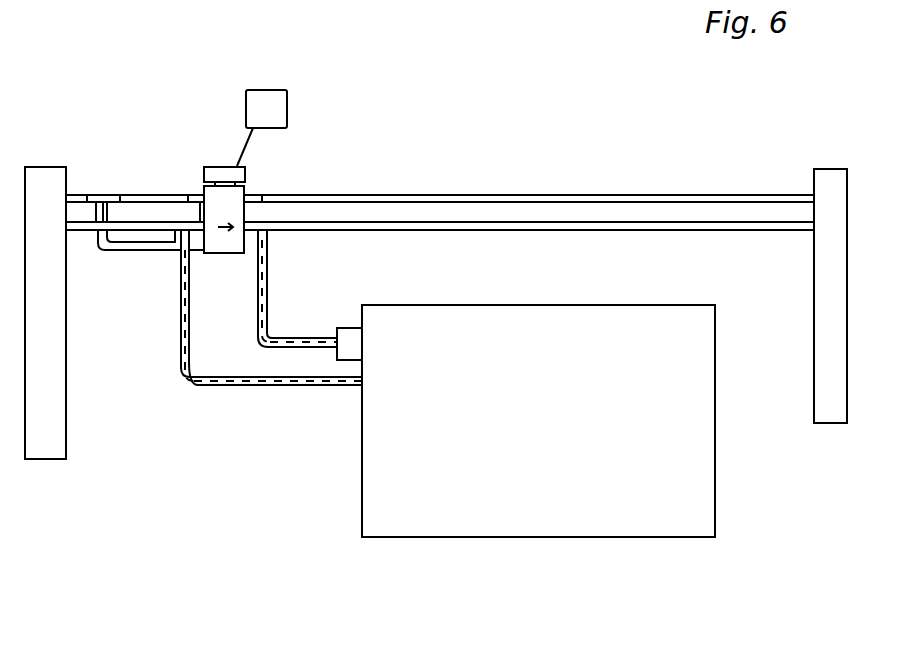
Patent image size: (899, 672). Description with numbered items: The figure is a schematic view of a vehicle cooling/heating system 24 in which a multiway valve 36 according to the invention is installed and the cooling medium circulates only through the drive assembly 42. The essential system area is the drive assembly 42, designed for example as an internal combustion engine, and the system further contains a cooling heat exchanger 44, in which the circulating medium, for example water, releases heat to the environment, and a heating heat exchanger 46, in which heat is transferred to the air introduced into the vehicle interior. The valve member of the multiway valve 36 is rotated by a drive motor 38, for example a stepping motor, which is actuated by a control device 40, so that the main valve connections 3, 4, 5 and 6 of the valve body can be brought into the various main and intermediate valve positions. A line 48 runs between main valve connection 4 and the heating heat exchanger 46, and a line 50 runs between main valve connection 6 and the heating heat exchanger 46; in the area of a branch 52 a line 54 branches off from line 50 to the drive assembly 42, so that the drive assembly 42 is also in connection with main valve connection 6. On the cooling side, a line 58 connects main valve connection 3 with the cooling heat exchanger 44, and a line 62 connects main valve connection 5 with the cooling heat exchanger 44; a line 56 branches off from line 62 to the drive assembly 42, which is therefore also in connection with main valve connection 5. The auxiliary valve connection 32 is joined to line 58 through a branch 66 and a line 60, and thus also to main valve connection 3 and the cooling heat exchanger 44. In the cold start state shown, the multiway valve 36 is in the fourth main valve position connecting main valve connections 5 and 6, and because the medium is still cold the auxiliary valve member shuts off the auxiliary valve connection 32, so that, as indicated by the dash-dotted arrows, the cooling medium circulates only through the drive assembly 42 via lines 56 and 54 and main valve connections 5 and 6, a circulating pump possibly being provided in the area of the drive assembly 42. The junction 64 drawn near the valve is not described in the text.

The main valve connection 3 is at (197, 193).
The main valve connection 4 is at (253, 193).
The main valve connection 5 is at (190, 218).
The main valve connection 6 is at (255, 222).
The cooling/heating system 24 is at (505, 114).
The auxiliary valve connection 32 is at (197, 258).
The multiway valve 36 is at (198, 102).
The drive motor 38 is at (215, 167).
The control device 40 is at (268, 88).
The drive assembly 42 is at (558, 512).
The cooling heat exchanger 44 is at (52, 427).
The heating heat exchanger 46 is at (833, 408).
The line 48 is at (580, 195).
The line 50 is at (572, 233).
The branch 52 is at (285, 246).
The line 54 is at (270, 318).
The line 56 is at (213, 388).
The line 58 is at (127, 193).
The line 60 is at (172, 250).
The line 62 is at (83, 228).
The junction 64 is at (173, 241).
The branch 66 is at (102, 178).